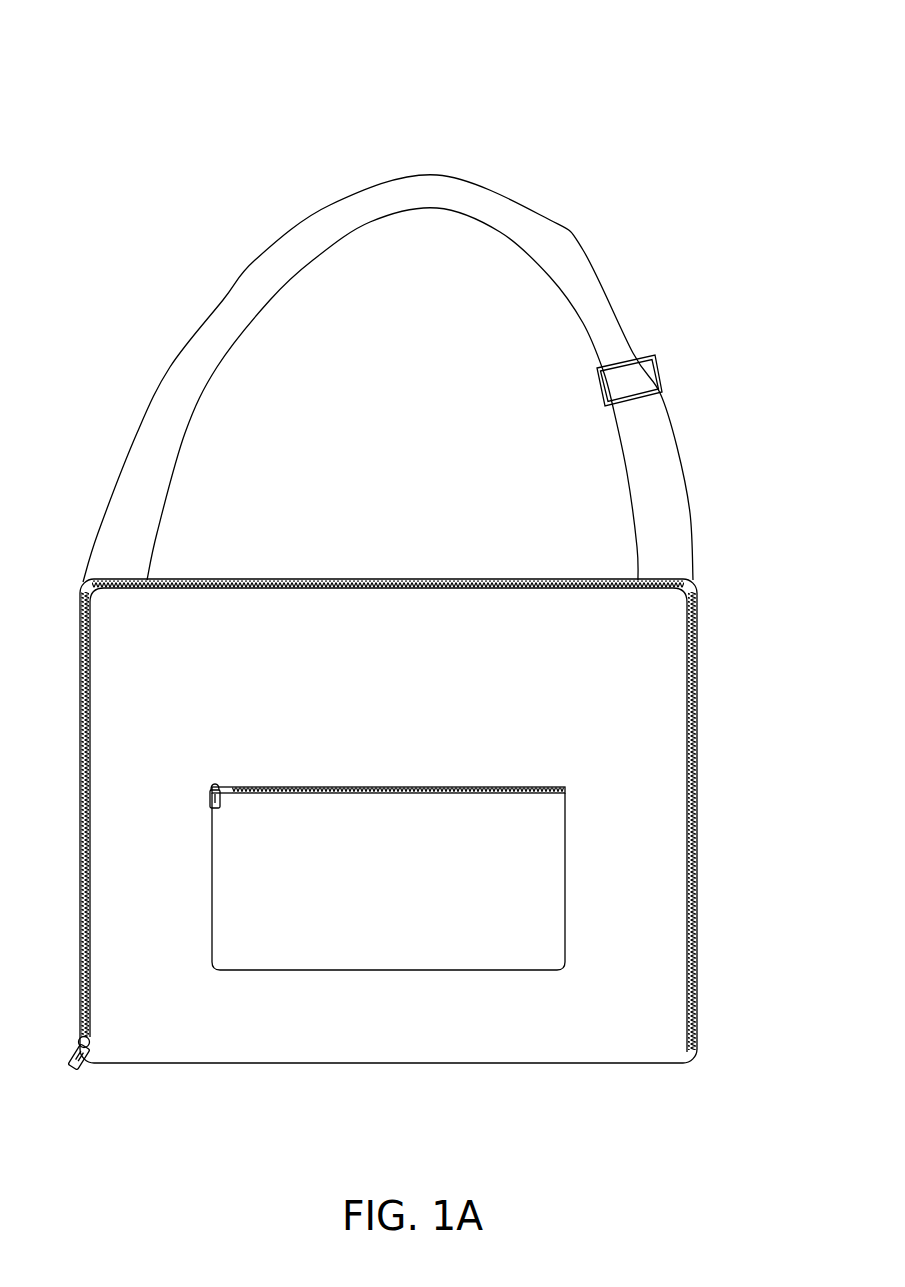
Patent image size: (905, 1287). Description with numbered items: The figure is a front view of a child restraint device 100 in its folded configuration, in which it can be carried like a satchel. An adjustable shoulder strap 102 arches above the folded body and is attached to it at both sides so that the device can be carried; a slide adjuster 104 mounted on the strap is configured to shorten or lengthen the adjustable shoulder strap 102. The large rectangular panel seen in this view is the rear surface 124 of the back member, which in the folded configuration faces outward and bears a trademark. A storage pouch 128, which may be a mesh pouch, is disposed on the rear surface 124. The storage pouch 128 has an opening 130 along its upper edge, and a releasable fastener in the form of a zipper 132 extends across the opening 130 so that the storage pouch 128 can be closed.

The child restraint device 100 is at (748, 30).
The adjustable shoulder strap 102 is at (583, 252).
The slide adjuster 104 is at (660, 370).
The rear surface 124 is at (416, 634).
The storage pouch 128 is at (403, 898).
The opening 130 is at (250, 777).
The zipper 132 is at (540, 785).